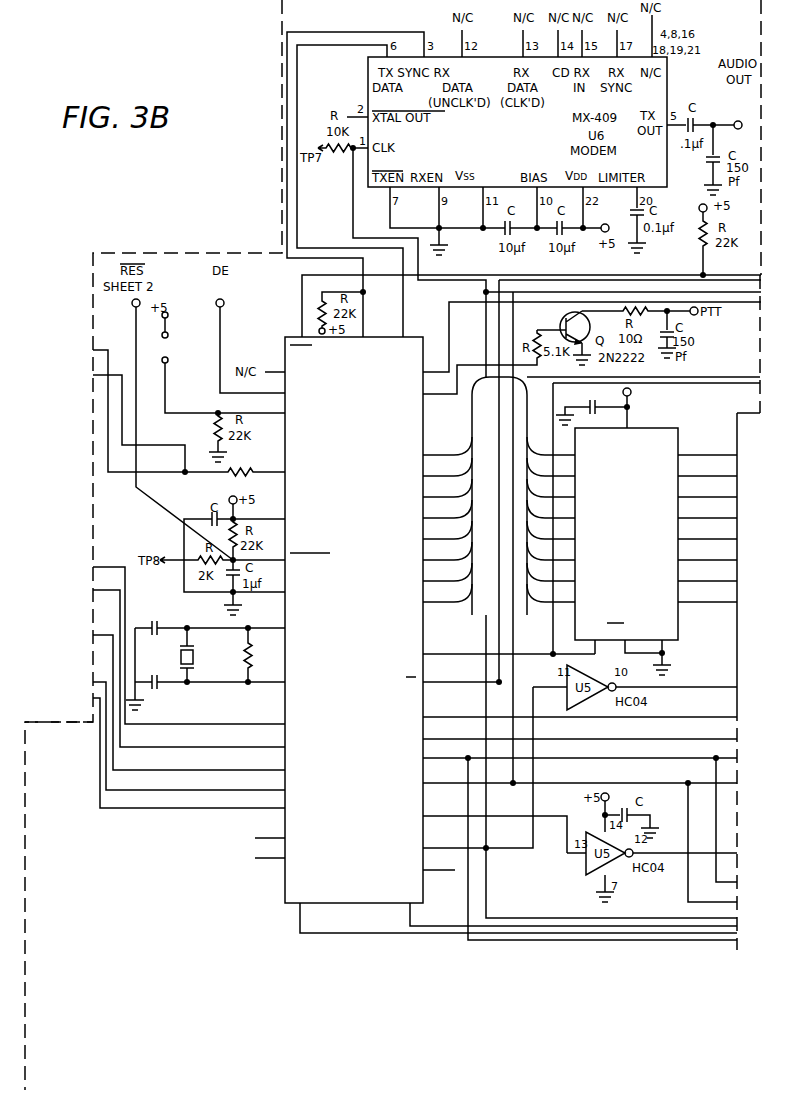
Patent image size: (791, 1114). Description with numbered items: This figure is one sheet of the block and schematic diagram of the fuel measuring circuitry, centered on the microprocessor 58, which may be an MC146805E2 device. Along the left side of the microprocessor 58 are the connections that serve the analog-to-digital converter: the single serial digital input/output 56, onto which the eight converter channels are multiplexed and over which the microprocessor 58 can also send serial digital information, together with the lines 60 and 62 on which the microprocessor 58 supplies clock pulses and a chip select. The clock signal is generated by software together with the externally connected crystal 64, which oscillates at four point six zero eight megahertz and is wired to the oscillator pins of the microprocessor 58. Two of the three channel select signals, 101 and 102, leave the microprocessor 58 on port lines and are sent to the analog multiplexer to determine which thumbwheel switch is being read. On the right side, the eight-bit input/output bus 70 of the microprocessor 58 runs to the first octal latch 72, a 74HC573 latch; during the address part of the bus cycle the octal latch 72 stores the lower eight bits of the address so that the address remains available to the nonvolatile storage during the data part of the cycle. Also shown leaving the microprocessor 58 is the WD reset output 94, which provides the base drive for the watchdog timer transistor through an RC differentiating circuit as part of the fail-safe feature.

The serial digital input/output 56 is at (158, 476).
The microprocessor 58 is at (364, 544).
The clock line 60 is at (180, 751).
The chip select line 62 is at (228, 725).
The crystal 64 is at (206, 640).
The input/output bus 70 is at (714, 377).
The first octal latch 72 is at (636, 611).
The WD reset output 94 is at (451, 336).
The channel select signal 101 is at (185, 815).
The channel select signal 102 is at (185, 797).